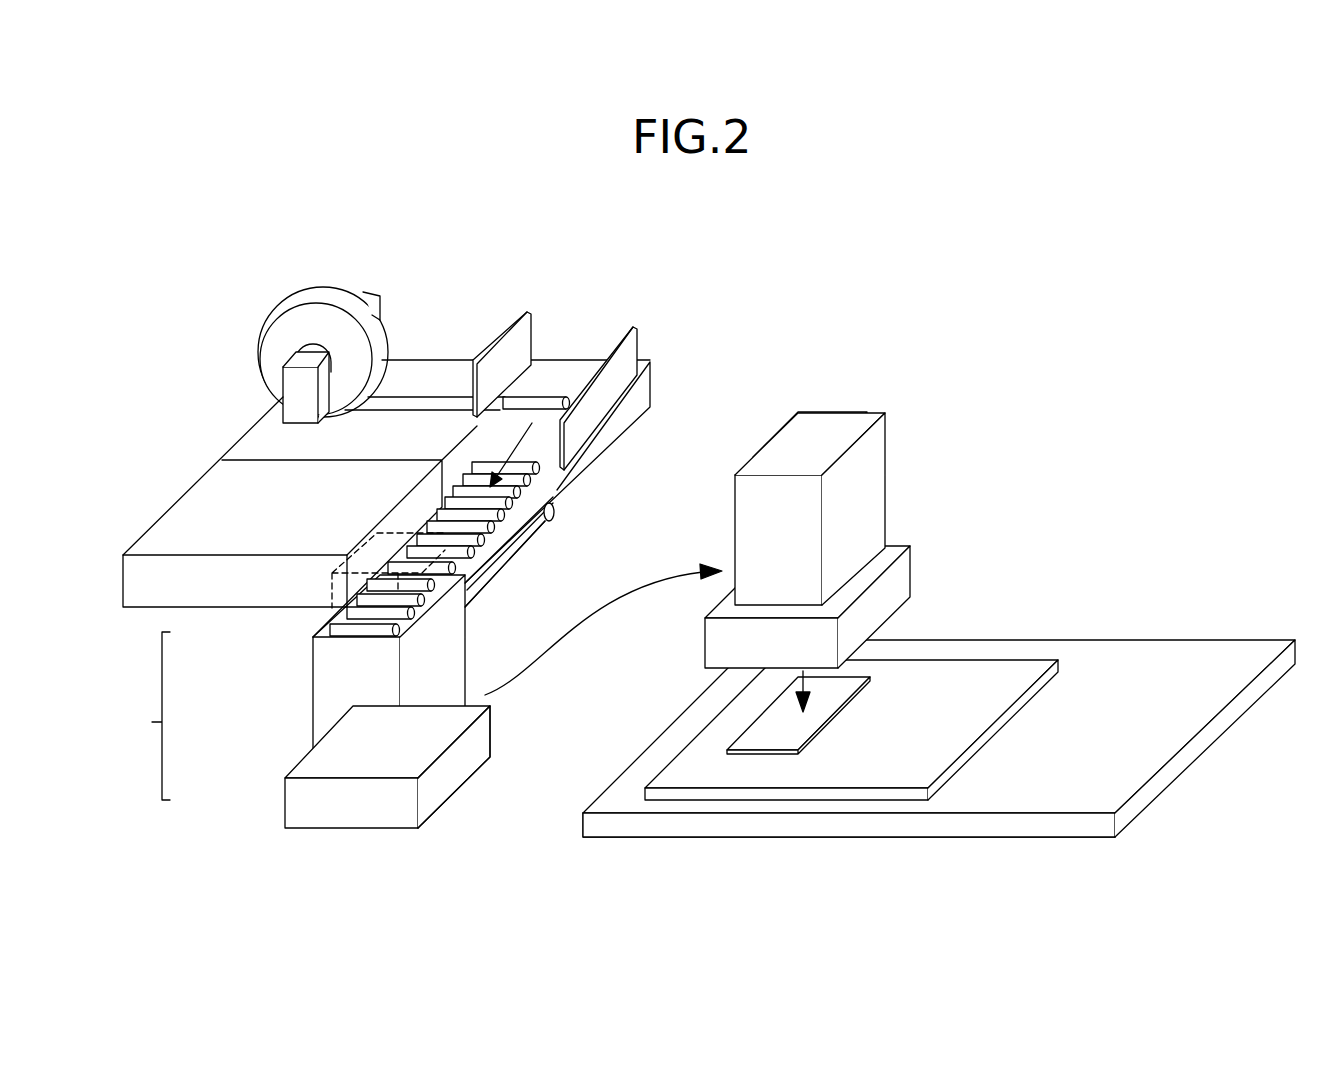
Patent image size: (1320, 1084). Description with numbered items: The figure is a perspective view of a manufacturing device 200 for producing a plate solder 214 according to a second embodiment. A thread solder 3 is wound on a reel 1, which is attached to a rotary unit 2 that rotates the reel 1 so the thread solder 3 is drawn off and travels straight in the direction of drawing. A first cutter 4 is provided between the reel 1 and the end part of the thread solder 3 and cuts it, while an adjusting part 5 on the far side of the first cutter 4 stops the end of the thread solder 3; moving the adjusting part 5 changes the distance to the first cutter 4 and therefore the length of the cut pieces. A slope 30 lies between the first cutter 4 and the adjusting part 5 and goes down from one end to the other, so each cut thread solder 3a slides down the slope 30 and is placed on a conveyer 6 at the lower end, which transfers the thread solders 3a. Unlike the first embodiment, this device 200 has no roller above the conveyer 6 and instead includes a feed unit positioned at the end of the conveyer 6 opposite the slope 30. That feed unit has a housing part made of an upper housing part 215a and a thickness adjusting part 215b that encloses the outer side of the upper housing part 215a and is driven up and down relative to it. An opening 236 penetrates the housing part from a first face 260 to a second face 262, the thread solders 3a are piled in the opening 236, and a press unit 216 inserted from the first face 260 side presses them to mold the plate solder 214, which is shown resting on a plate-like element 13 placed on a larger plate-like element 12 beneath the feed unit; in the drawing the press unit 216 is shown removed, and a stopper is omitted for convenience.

The manufacturing device 200 is at (157, 327).
The reel 1 is at (258, 355).
The rotary unit 2 is at (376, 291).
The thread solder 3 is at (543, 400).
The cut thread solder 3a is at (494, 529).
The first cutter 4 is at (493, 337).
The adjusting part 5 is at (630, 320).
The conveyer 6 is at (556, 510).
The slope 30 is at (628, 403).
The substrate 12 is at (1141, 648).
The stage 13 is at (977, 672).
The plate solder 214 is at (763, 745).
The upper housing part 215a is at (352, 690).
The thickness adjusting part 215b is at (285, 802).
The press unit 216 is at (333, 582).
The opening 236 is at (446, 581).
The first face 260 is at (413, 612).
The second face 262 is at (457, 787).